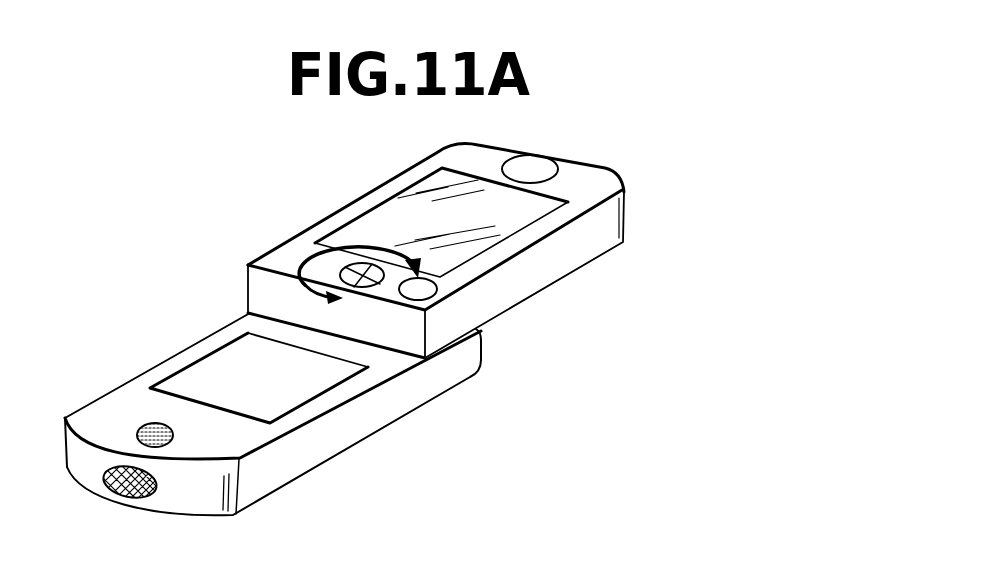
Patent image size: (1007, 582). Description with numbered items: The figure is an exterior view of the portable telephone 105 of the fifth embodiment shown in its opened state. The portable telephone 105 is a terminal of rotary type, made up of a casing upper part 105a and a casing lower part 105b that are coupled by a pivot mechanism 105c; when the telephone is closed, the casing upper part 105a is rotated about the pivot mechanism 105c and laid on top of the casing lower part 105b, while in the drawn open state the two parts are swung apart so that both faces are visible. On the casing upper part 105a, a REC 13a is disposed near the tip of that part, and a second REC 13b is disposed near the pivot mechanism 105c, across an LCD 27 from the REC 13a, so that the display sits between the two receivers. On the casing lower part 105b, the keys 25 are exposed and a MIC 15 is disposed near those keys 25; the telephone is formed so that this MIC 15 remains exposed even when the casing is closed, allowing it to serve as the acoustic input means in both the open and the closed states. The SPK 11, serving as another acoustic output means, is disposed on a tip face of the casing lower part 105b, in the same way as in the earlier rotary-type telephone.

The portable telephone 105 is at (609, 120).
The casing upper part 105a is at (597, 237).
The casing lower part 105b is at (413, 402).
The pivot mechanism 105c is at (378, 280).
The REC 13a is at (547, 168).
The REC 13b is at (432, 295).
The LCD 27 is at (505, 225).
The keys 25 is at (303, 387).
The MIC 15 is at (173, 433).
The SPK 11 is at (142, 498).